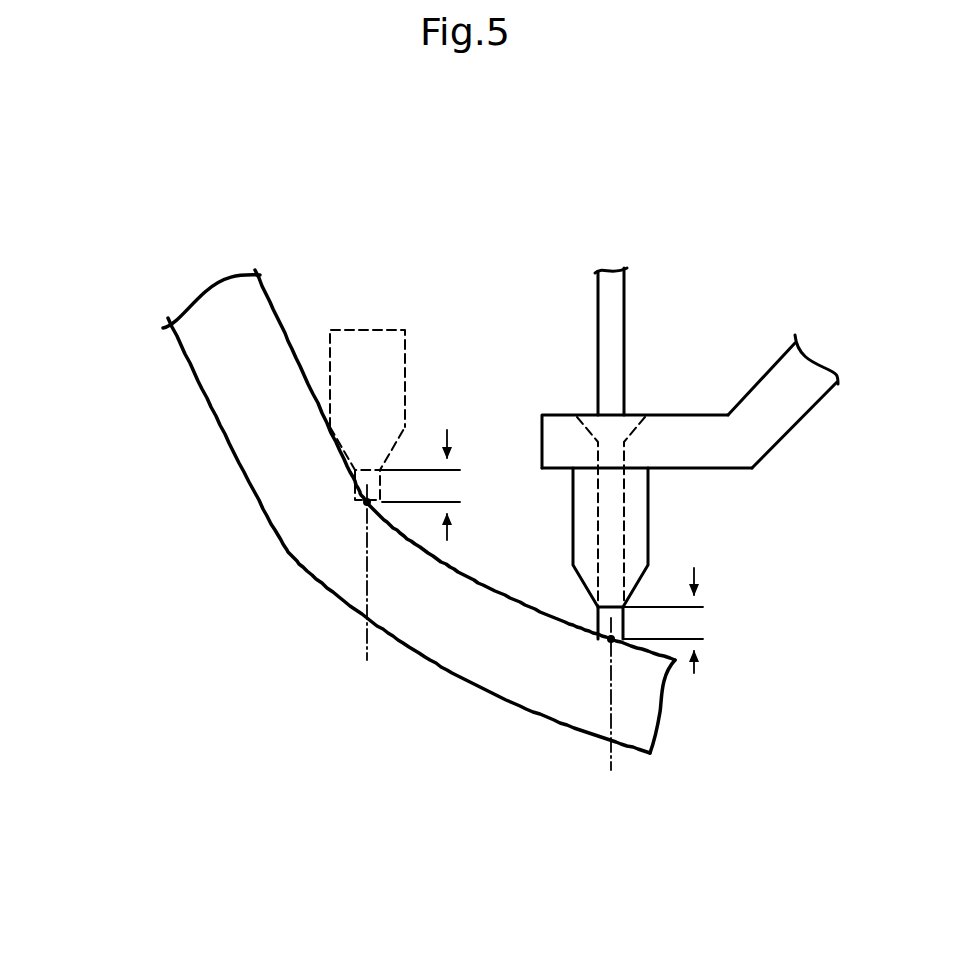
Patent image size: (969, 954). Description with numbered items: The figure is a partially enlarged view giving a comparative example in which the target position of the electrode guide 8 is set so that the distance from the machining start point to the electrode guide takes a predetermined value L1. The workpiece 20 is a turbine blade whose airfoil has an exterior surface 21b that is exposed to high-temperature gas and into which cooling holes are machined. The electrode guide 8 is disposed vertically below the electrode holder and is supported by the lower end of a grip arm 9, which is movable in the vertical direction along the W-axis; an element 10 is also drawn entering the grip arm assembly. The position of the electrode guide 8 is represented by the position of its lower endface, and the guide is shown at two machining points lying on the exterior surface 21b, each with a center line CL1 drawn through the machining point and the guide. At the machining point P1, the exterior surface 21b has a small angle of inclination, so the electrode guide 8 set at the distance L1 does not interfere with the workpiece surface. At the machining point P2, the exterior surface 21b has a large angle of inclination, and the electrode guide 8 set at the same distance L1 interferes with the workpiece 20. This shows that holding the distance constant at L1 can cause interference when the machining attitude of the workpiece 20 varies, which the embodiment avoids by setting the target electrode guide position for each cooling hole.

The turbine blade 20 is at (360, 477).
The exterior surface 21b is at (272, 307).
The electrode guide 8 is at (407, 375).
The supply tube 10 is at (624, 317).
The grip arm 9 is at (780, 442).
The machining point P1 is at (611, 639).
The machining point P2 is at (367, 502).
The nozzle center line CL1 is at (493, 644).
The predetermined value of distance L1 is at (556, 551).